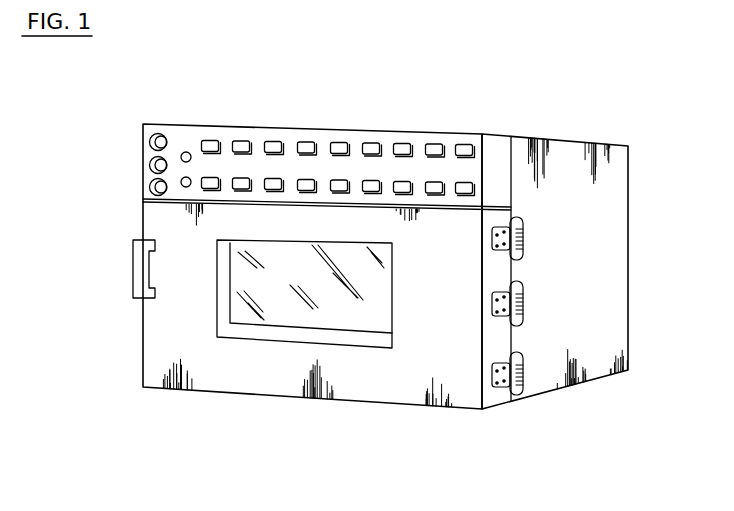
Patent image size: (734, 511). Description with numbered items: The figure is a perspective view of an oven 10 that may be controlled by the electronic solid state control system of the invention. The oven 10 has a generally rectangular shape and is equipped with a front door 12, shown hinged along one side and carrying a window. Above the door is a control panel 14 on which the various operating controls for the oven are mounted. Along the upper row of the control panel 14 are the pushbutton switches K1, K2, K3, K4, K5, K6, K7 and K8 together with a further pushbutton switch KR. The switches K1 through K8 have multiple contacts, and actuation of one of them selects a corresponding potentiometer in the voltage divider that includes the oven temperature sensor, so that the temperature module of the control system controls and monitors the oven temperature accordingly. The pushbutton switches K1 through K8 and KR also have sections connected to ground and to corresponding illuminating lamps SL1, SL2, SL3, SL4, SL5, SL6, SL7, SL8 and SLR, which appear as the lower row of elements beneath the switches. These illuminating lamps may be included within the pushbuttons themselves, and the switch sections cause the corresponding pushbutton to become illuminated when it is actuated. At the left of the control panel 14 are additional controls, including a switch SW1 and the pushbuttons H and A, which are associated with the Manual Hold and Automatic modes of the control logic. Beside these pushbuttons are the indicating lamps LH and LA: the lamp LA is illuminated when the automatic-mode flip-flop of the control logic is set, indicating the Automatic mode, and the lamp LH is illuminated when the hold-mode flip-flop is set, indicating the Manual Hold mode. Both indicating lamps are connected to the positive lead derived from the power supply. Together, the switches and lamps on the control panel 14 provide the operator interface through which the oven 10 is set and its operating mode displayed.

The oven 10 is at (585, 278).
The front door 12 is at (362, 383).
The control panel 14 is at (186, 136).
The power switch SW1 is at (149, 141).
The pushbutton H-bar H is at (149, 164).
The pushbutton A-bar A is at (149, 187).
The indicating lamp LH is at (189, 152).
The indicating lamp LA is at (182, 184).
The pushbutton switch K1 is at (211, 140).
The pushbutton switch K2 is at (243, 140).
The pushbutton switch K3 is at (274, 141).
The pushbutton switch K4 is at (307, 141).
The pushbutton switch K5 is at (340, 142).
The pushbutton switch K6 is at (372, 142).
The pushbutton switch K7 is at (403, 143).
The pushbutton switch K8 is at (435, 143).
The pushbutton switch KR is at (466, 146).
The illuminating lamp SL1 is at (211, 189).
The illuminating lamp SL2 is at (240, 190).
The illuminating lamp SL3 is at (273, 190).
The illuminating lamp SL4 is at (308, 191).
The illuminating lamp SL5 is at (342, 191).
The illuminating lamp SL6 is at (374, 192).
The illuminating lamp SL7 is at (405, 192).
The illuminating lamp SL8 is at (437, 186).
The illuminating lamp SLR is at (468, 191).